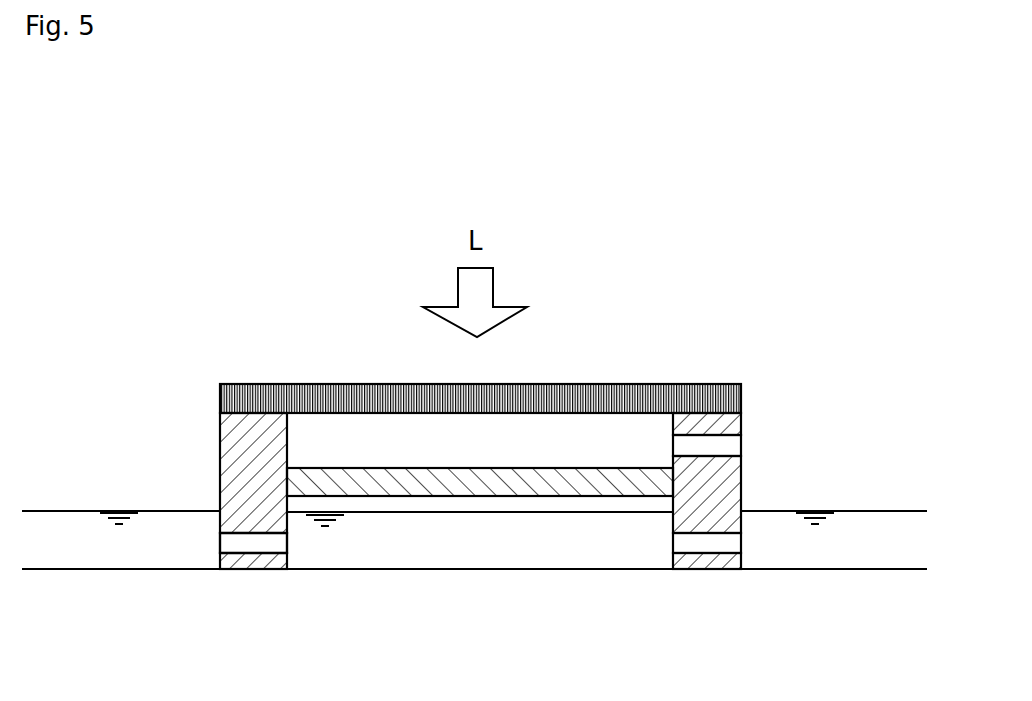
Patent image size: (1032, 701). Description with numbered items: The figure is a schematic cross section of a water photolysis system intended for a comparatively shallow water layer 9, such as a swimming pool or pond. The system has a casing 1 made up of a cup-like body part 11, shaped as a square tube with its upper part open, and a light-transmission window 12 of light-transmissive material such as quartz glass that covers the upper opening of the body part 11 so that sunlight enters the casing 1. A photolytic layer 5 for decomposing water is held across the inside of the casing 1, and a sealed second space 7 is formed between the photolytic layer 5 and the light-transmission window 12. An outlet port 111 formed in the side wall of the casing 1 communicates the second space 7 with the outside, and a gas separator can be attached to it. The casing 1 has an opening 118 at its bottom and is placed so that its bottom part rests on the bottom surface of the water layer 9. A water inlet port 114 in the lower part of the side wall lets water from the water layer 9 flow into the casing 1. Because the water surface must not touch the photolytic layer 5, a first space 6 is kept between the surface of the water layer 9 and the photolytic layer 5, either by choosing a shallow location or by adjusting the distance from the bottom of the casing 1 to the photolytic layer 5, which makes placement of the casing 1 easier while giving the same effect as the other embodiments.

The casing 1 is at (470, 491).
The photolytic layer 5 is at (338, 478).
The first space 6 is at (303, 503).
The second space 7 is at (520, 440).
The water layer 9 is at (497, 556).
The body part 11 is at (498, 517).
The light-transmission window 12 is at (225, 392).
The outlet port 111 is at (741, 437).
The water inlet port 114 is at (220, 542).
The opening 118 is at (288, 568).